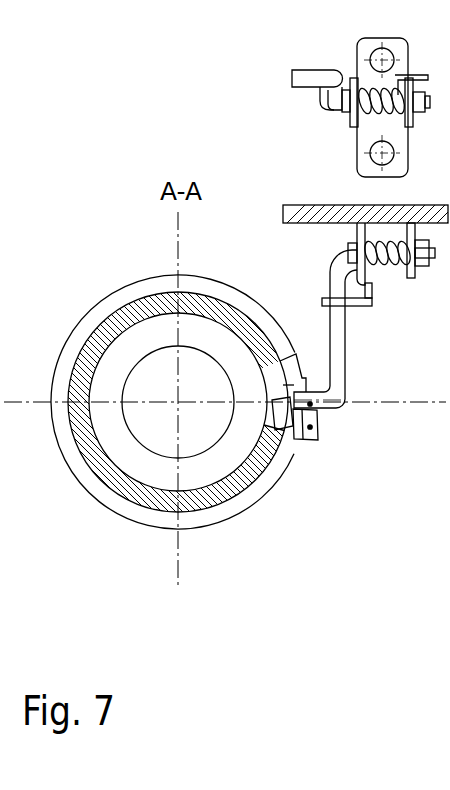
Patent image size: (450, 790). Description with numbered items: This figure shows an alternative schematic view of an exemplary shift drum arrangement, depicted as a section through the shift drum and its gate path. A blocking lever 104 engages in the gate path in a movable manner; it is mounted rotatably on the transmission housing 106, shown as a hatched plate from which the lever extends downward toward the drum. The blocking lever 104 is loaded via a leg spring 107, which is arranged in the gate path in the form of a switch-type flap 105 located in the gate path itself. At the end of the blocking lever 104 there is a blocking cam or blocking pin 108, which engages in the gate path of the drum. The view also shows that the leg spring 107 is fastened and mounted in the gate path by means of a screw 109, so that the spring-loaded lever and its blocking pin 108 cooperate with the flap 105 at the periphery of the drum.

The blocking lever 104 is at (337, 355).
The switch-type flap 105 is at (297, 422).
The transmission housing 106 is at (333, 213).
The leg spring 107 is at (368, 288).
The blocking pin 108 is at (310, 404).
The screw 109 is at (310, 427).